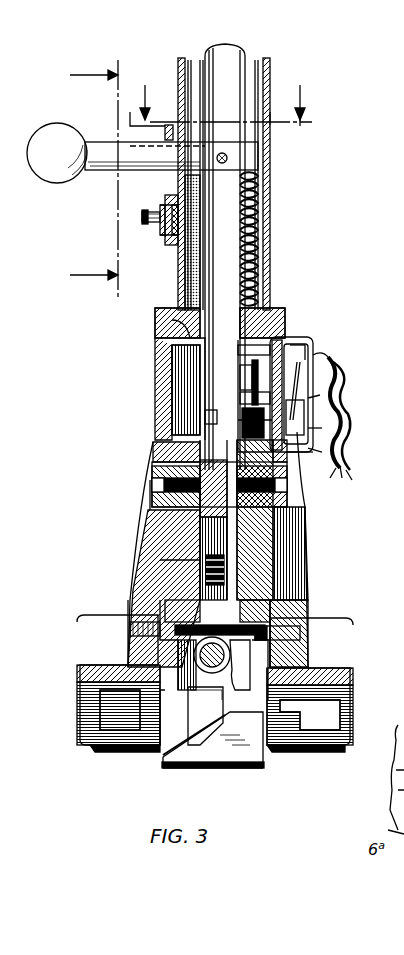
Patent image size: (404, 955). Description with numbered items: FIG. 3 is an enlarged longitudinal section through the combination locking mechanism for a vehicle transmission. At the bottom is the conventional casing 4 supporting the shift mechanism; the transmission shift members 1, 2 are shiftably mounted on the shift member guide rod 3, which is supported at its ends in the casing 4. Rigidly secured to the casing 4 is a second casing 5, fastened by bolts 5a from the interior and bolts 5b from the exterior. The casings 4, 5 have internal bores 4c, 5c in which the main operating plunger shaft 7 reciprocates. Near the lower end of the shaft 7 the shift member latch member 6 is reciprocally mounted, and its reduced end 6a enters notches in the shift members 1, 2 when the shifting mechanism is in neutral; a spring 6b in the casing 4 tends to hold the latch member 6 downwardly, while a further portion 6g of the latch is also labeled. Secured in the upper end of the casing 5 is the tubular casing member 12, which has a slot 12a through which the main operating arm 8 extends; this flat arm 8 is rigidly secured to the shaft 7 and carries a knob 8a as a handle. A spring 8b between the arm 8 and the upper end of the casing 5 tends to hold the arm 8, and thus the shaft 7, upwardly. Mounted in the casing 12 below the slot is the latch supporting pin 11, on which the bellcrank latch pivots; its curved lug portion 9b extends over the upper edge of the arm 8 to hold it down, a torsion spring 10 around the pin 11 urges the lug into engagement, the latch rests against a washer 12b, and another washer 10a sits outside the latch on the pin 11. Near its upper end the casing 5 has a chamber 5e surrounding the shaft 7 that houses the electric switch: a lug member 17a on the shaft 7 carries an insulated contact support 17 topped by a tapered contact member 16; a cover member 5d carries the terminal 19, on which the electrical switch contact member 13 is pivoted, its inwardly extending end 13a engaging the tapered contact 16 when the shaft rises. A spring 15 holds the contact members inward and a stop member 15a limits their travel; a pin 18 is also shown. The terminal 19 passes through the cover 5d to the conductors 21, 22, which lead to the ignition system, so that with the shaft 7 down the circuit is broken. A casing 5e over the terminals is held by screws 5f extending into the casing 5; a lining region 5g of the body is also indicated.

The vehicle transmission shift member 1 is at (262, 768).
The vehicle transmission shift member 2 is at (263, 770).
The shift member guide rod 3 is at (208, 690).
The casing 4 is at (152, 500).
The internal bore 4c is at (300, 552).
The casing 5 is at (282, 312).
The bolt 5a is at (308, 604).
The bolt 5b is at (280, 500).
The internal bore 5c is at (172, 335).
The cover member 5d is at (290, 340).
The chamber 5e is at (305, 352).
The screw 5f is at (322, 452).
The body cavity lining 5g is at (172, 380).
The shift member latch member 6 is at (150, 478).
The reduced end 6a is at (130, 590).
The spring 6b is at (160, 572).
The sleeve flange 6g is at (152, 500).
The main operating plunger shaft 7 is at (244, 58).
The main operating arm 8 is at (98, 160).
The knob 8a is at (50, 155).
The spring 8b is at (258, 190).
The curved lug portion 9b is at (178, 130).
The spring 10 is at (160, 226).
The washer 10a is at (172, 208).
The latch supporting pin 11 is at (148, 214).
The tubular casing member 12 is at (272, 78).
The slot 12a is at (170, 124).
The washer 12b is at (172, 246).
The electrical switch contact member 13 is at (296, 362).
The inwardly extending end 13a is at (276, 338).
The spring 15 is at (322, 430).
The stop member 15a is at (320, 400).
The tapered contact member 16 is at (240, 378).
The insulated contact support 17 is at (287, 465).
The lug member 17a is at (200, 418).
The pin 18 is at (240, 396).
The terminal 19 is at (310, 454).
The conductor 21 is at (330, 358).
The conductor 22 is at (348, 376).